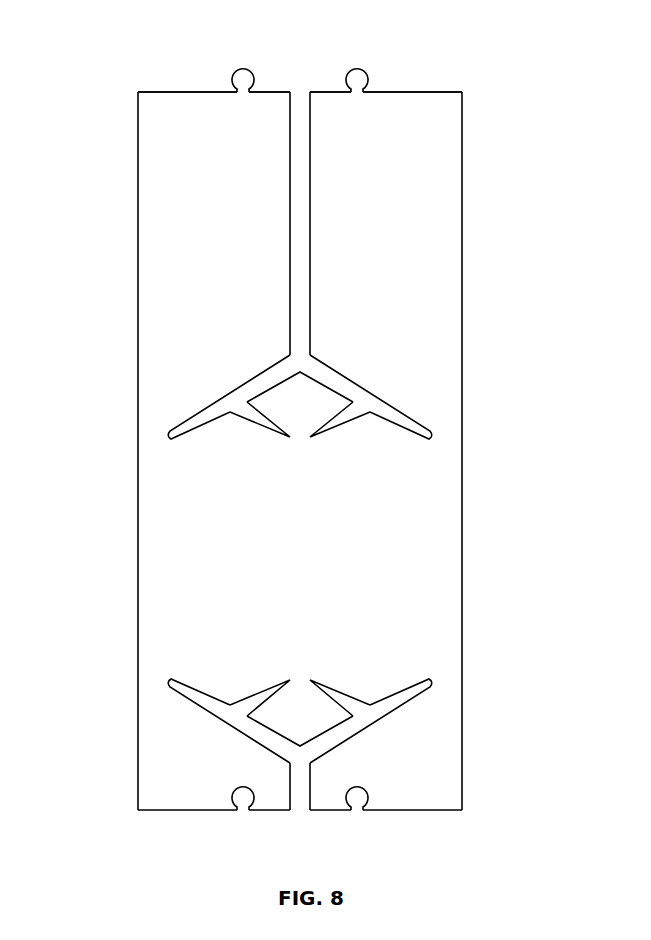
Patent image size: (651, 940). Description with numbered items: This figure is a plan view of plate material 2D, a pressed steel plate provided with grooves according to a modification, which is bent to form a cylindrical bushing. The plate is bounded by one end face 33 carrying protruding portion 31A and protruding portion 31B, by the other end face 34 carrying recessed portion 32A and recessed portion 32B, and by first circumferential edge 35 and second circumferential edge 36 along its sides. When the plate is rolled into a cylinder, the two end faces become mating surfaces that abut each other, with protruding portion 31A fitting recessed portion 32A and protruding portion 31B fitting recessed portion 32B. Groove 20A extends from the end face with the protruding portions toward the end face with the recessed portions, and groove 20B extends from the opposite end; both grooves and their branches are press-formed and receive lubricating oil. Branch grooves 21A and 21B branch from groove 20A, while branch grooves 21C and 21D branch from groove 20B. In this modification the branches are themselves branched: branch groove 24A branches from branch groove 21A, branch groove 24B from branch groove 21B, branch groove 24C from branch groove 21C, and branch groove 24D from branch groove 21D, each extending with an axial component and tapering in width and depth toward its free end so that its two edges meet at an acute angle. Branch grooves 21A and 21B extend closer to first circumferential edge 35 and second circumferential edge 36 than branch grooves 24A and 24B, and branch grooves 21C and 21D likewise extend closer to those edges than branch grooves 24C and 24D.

The plate material 2D is at (486, 151).
The groove 20A is at (303, 213).
The groove 20B is at (312, 780).
The branch groove 21A is at (345, 380).
The branch groove 21B is at (268, 380).
The branch groove 21C is at (340, 735).
The branch groove 21D is at (255, 730).
The branch groove 24A is at (337, 425).
The branch groove 24B is at (257, 422).
The branch groove 24C is at (333, 682).
The branch groove 24D is at (265, 693).
The protruding portion 31A is at (229, 84).
The protruding portion 31B is at (341, 84).
The recessed portion 32A is at (245, 814).
The recessed portion 32B is at (358, 813).
The end face 33 is at (412, 91).
The end face 34 is at (434, 811).
The first circumferential edge 35 is at (138, 540).
The second circumferential edge 36 is at (462, 557).